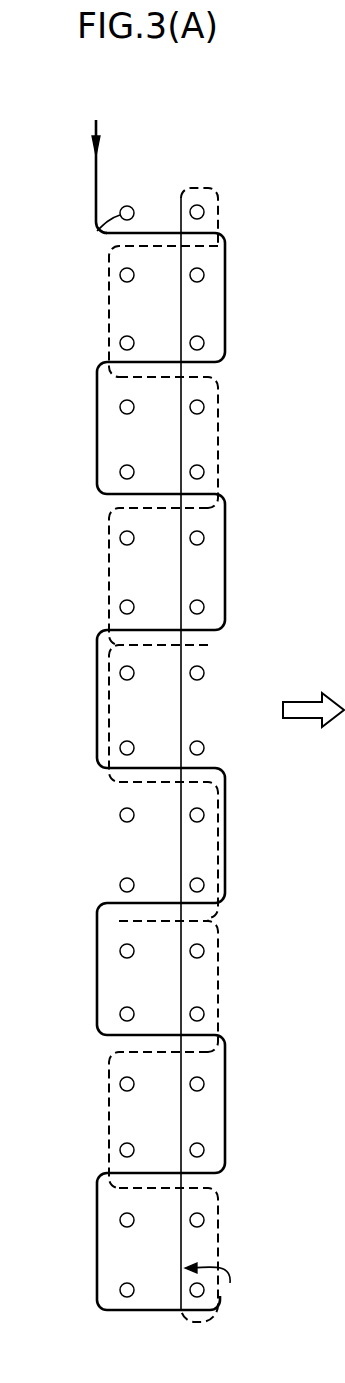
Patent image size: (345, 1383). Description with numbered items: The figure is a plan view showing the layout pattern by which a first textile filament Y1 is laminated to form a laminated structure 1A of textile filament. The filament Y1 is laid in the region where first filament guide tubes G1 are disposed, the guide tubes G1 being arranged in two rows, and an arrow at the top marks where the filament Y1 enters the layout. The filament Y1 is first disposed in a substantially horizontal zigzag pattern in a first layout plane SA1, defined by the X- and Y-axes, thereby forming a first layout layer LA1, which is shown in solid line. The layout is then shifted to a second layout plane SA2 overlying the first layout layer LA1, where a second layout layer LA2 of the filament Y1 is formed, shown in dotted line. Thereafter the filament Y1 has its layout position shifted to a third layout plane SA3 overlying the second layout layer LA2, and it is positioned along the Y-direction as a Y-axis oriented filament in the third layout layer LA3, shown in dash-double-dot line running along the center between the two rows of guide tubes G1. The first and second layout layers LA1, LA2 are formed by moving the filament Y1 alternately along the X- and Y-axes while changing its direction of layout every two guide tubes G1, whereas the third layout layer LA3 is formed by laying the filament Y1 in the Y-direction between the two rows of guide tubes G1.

The first textile filament Y1 is at (96, 200).
The first filament guide tube G1 is at (100, 226).
The first layout layer LA1 is at (97, 462).
The second layout layer LA2 is at (108, 560).
The third layout layer LA3 is at (181, 847).
The laminated structure of textile filament 1A is at (98, 687).
The first layout plane SA1 is at (97, 1035).
The second layout plane SA2 is at (103, 1080).
The third layout plane SA3 is at (92, 1196).